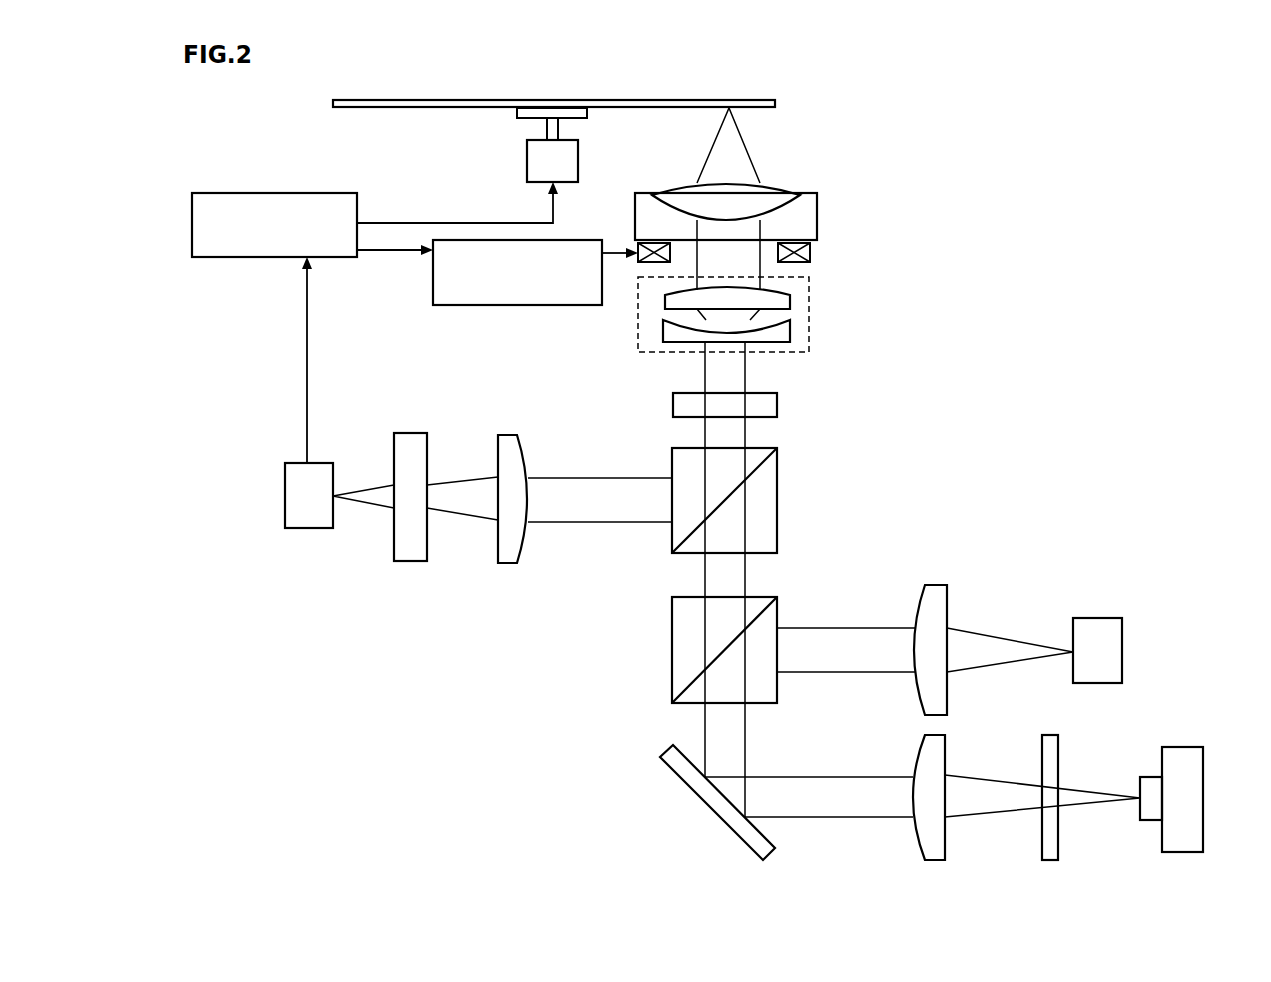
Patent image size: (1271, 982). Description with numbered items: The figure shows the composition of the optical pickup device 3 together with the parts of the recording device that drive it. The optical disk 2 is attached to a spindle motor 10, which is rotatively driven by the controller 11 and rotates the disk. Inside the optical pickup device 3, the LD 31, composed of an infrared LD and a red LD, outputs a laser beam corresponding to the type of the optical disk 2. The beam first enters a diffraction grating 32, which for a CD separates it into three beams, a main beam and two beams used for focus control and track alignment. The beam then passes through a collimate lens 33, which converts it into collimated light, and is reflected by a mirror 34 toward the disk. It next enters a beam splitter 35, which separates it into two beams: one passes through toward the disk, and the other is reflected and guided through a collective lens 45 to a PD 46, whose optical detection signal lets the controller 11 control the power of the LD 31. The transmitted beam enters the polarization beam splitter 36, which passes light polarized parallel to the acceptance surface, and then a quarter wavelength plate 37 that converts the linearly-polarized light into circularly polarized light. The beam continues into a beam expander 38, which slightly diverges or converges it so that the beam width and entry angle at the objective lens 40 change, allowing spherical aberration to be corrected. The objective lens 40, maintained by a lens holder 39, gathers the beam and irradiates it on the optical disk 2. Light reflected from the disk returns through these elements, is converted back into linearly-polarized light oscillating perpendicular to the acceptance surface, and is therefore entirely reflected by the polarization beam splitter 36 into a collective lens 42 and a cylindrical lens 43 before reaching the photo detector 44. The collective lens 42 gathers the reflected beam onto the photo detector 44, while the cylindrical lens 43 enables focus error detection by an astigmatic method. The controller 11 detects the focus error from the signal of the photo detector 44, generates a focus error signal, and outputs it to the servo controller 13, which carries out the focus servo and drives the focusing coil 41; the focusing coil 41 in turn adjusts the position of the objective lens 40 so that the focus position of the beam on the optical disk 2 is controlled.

The optical disk 2 is at (333, 100).
The optical pickup device 3 is at (842, 82).
The spindle motor 10 is at (542, 165).
The controller 11 is at (312, 205).
The servo controller 13 is at (443, 293).
The LD 31 is at (1180, 838).
The diffraction grating 32 is at (1052, 847).
The collimate lens 33 is at (927, 838).
The mirror 34 is at (717, 800).
The beam splitter 35 is at (683, 622).
The polarization beam splitter 36 is at (687, 470).
The quarter wavelength plate 37 is at (765, 405).
The beam expander 38 is at (793, 317).
The lens holder 39 is at (805, 227).
The objective lens 40 is at (772, 193).
The focusing coil 41 is at (807, 253).
The collective lens 42 is at (508, 447).
The cylindrical lens 43 is at (410, 445).
The photo detector 44 is at (320, 517).
The collective lens 45 is at (930, 600).
The PD 46 is at (1090, 628).